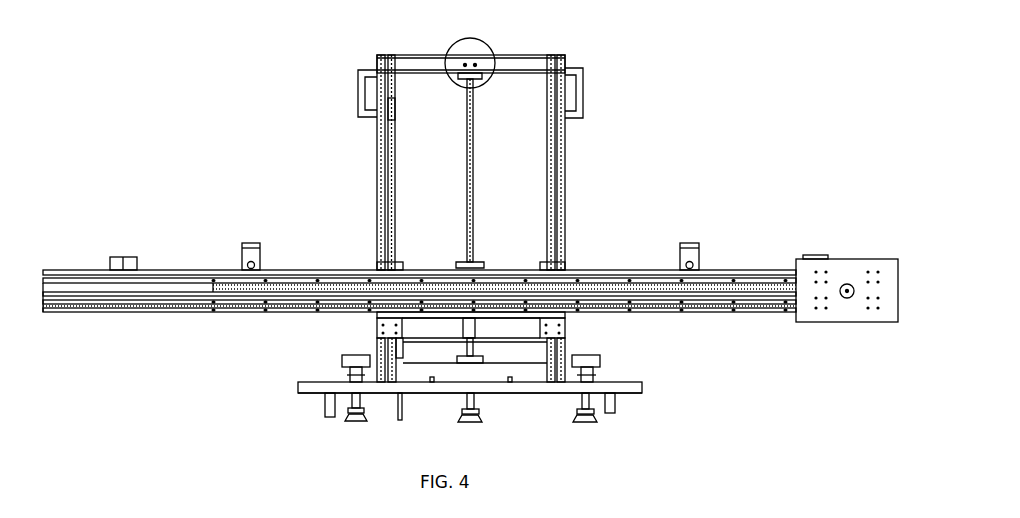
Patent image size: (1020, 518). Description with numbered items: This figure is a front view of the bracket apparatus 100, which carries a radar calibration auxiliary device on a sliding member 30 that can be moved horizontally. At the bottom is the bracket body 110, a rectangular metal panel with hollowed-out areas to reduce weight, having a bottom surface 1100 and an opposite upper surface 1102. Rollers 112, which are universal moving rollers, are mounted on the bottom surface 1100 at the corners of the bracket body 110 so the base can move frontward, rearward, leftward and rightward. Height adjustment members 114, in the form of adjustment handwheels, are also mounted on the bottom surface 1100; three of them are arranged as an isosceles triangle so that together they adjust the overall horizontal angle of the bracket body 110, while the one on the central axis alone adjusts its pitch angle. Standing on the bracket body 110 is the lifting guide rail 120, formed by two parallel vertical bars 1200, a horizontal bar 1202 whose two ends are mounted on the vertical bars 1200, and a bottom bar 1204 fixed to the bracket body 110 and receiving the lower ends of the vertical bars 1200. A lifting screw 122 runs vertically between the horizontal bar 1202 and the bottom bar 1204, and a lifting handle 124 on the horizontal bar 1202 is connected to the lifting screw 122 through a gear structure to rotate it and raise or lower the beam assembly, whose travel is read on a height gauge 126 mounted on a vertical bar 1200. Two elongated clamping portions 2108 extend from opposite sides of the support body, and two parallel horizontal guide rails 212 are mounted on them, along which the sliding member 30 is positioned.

The bracket apparatus 100 is at (629, 129).
The bracket body 110 is at (429, 389).
The bottom surface 1100 is at (318, 393).
The upper surface 1102 is at (320, 382).
The roller 112 is at (617, 409).
The height adjustment member 114 is at (597, 358).
The lifting guide rail 120 is at (560, 200).
The vertical bar 1200 is at (392, 160).
The horizontal bar 1202 is at (404, 57).
The bottom bar 1204 is at (413, 376).
The lifting screw 122 is at (467, 213).
The lifting handle 124 is at (460, 46).
The height gauge 126 is at (396, 116).
The guide rail 212 is at (712, 267).
The clamping portion 2108 is at (562, 266).
The sliding member 30 is at (835, 265).